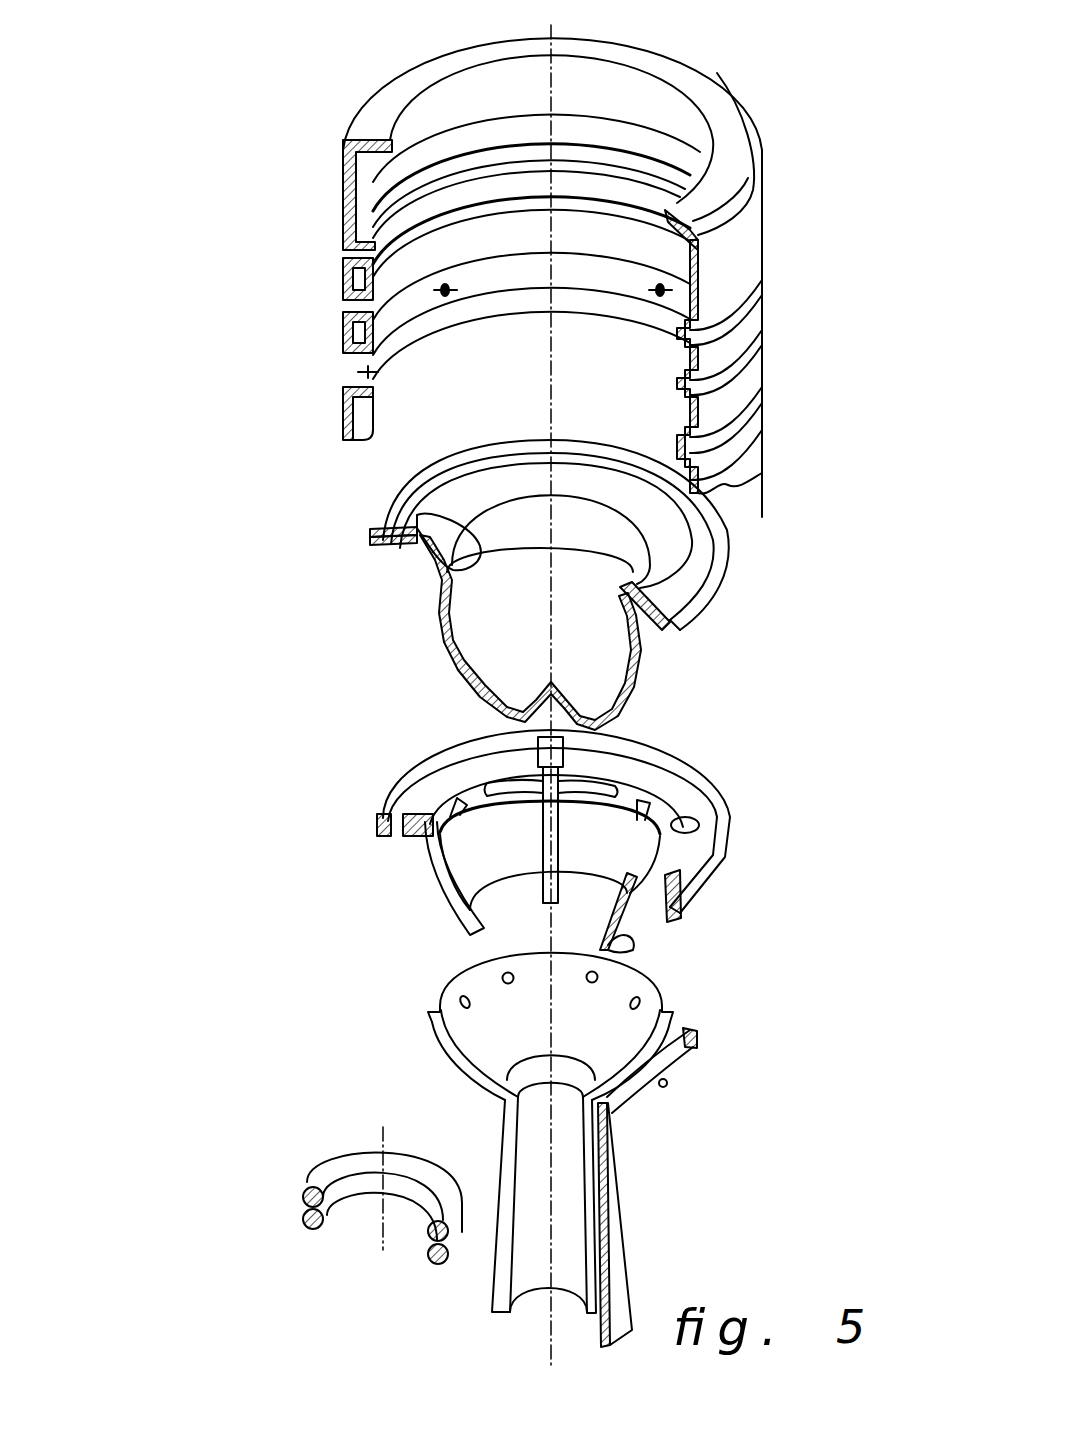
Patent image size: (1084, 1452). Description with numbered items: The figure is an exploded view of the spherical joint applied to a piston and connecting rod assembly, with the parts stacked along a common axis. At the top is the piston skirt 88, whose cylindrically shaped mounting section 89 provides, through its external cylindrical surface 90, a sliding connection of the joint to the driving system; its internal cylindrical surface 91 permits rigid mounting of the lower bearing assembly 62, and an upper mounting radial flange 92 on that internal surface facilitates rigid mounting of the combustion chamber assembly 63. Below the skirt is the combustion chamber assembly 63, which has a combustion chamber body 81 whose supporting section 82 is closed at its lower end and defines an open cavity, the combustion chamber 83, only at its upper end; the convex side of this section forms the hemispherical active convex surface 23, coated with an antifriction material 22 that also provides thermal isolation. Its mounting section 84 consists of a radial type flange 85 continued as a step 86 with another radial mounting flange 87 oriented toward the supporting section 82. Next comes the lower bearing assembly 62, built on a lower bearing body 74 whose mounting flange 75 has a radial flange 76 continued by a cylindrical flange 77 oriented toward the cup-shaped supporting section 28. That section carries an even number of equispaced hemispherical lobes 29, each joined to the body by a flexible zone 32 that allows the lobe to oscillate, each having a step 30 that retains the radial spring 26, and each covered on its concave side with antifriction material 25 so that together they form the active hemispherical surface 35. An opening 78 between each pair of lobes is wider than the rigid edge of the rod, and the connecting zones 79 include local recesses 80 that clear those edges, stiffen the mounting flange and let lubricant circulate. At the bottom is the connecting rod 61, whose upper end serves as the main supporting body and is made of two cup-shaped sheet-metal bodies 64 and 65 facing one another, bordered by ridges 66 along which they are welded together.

The antifriction material 22 is at (508, 717).
The active convex surface 23 is at (640, 679).
The antifriction material 25 is at (497, 870).
The radial spring 26 is at (80, 960).
The supporting section 28 is at (422, 908).
The lobes 29 is at (437, 887).
The step 30 is at (602, 950).
The flexible zone 32 is at (463, 806).
The active hemispherical surface 35 is at (662, 887).
The connecting rod 61 is at (381, 1133).
The lower bearing assembly 62 is at (482, 884).
The combustion chamber assembly 63 is at (481, 621).
The body 64 is at (500, 1012).
The body 65 is at (630, 1100).
The ridges 66 is at (657, 1033).
The lower bearing body 74 is at (437, 868).
The mounting flange 75 is at (463, 815).
The radial flange 76 is at (385, 816).
The cylindrical flange 77 is at (395, 832).
The opening 78 is at (508, 842).
The connecting zones 79 is at (432, 832).
The local recesses 80 is at (687, 823).
The combustion chamber body 81 is at (434, 584).
The supporting section 82 is at (440, 640).
The combustion chamber 83 is at (603, 628).
The mounting section 84 is at (339, 525).
The radial type flange 85 is at (410, 530).
The step 86 is at (412, 545).
The radial mounting flange 87 is at (372, 549).
The piston skirt 88 is at (485, 278).
The mounting section 89 is at (347, 282).
The external cylindrical surface 90 is at (763, 515).
The internal cylindrical surface 91 is at (376, 430).
The upper mounting radial flange 92 is at (347, 145).